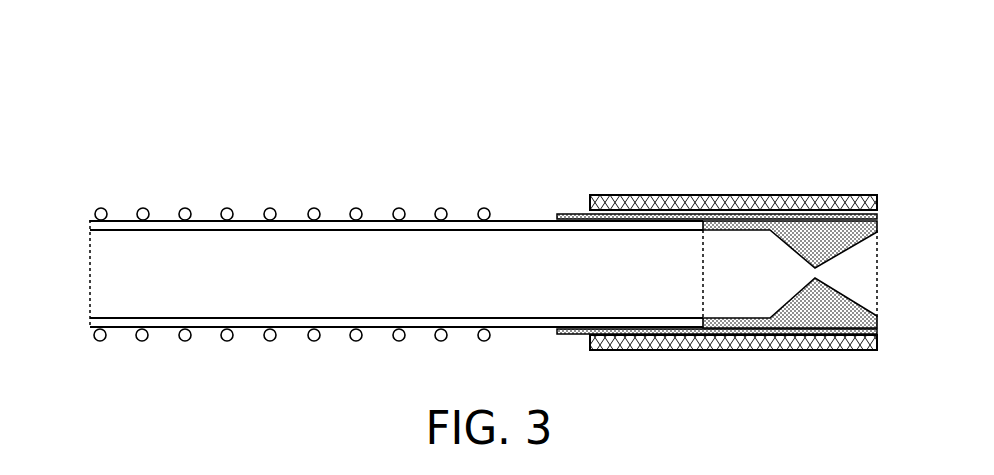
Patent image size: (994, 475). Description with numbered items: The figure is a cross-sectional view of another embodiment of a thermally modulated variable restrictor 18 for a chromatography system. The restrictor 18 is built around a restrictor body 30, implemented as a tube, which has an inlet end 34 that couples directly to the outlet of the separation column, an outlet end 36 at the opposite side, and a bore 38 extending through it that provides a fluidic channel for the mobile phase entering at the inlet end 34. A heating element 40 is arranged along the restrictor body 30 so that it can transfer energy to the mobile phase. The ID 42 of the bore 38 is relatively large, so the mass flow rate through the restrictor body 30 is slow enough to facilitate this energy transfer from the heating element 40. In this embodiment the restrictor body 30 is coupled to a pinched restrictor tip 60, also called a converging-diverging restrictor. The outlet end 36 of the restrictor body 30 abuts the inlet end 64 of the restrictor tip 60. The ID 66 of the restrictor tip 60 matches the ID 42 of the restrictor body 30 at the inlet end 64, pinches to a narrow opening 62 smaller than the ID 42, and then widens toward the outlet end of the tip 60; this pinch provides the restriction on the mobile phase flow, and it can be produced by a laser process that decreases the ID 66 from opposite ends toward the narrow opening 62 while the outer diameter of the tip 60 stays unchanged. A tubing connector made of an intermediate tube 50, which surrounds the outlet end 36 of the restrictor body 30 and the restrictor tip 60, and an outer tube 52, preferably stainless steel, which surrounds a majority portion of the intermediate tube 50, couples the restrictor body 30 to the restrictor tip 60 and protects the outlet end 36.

The thermally modulated variable restrictor 18 is at (428, 78).
The restrictor body 30 is at (120, 331).
The inlet end 34 is at (90, 285).
The outlet end 36 is at (703, 280).
The bore 38 is at (222, 305).
The heating element 40 is at (142, 208).
The inner diameter of the bore 42 is at (372, 243).
The intermediate tube 50 is at (563, 212).
The outer tube 52 is at (853, 195).
The pinched restrictor tip 60 is at (833, 238).
The narrow opening 62 is at (825, 276).
The inlet end of the restrictor tip 64 is at (703, 300).
The inner diameter of the restrictor tip 66 is at (755, 243).